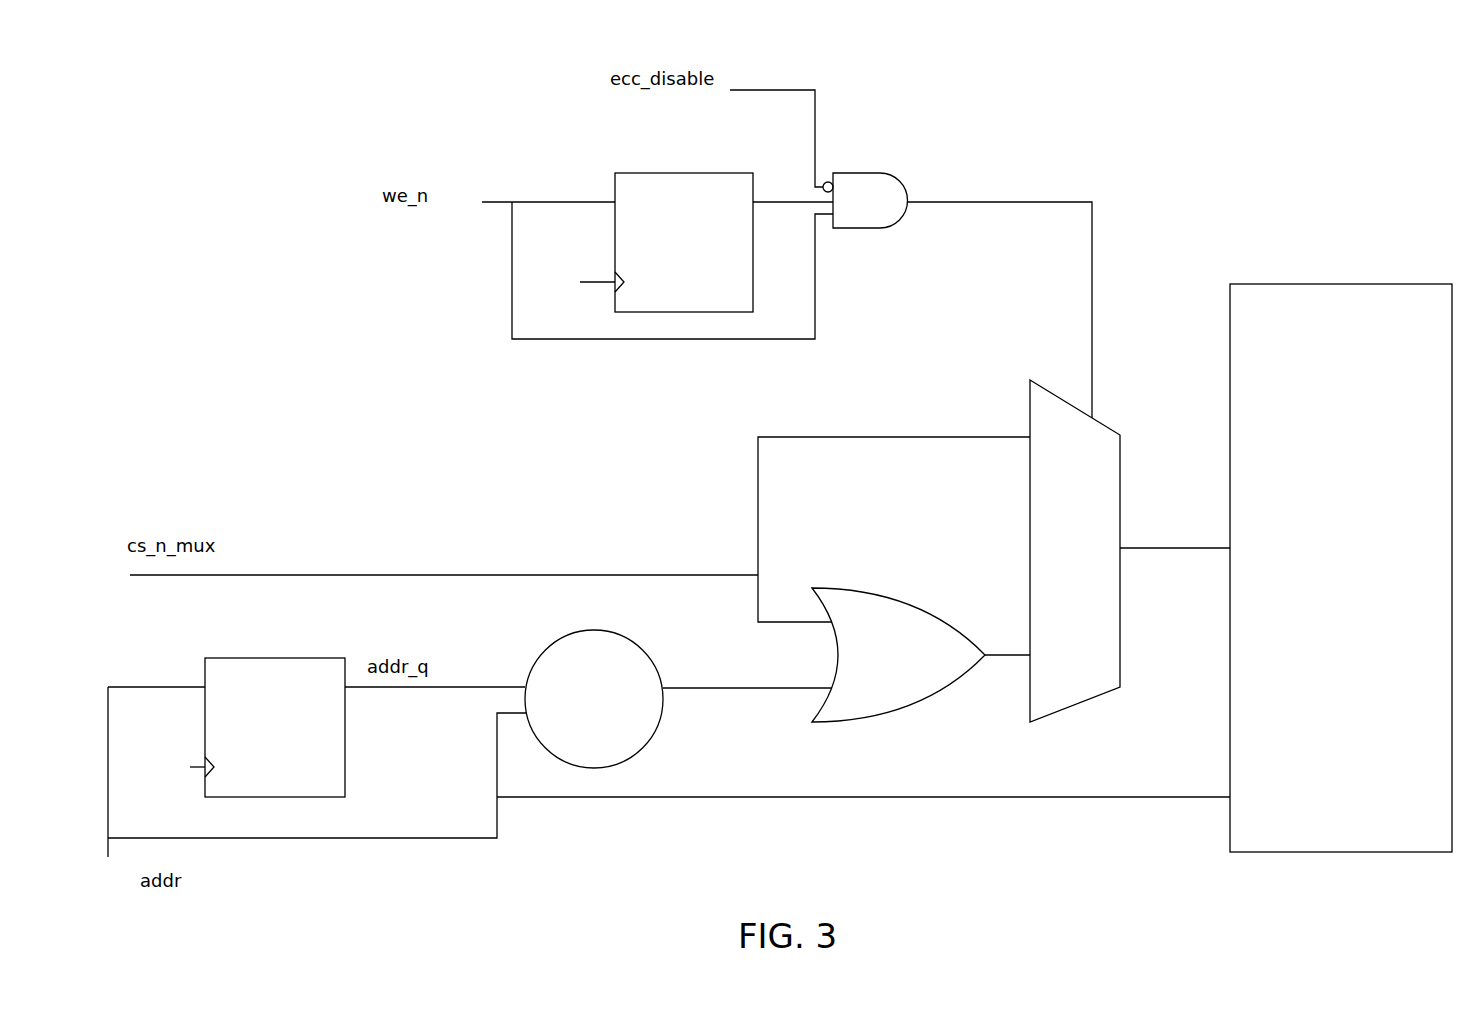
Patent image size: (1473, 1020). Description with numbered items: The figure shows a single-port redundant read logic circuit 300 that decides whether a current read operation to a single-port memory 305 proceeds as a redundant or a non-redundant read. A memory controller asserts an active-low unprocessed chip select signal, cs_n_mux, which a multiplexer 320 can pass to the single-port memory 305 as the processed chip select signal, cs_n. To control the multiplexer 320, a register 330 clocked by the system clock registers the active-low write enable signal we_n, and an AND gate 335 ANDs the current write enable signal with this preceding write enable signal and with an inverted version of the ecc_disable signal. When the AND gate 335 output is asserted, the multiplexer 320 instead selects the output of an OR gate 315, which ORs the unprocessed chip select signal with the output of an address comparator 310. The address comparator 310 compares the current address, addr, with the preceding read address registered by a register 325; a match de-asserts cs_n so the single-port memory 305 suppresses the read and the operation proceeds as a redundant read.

The single-port redundant read logic circuit 300 is at (343, 82).
The single-port memory 305 is at (1282, 284).
The address comparator 310 is at (663, 705).
The OR gate 315 is at (900, 713).
The multiplexer 320 is at (1120, 645).
The register 325 is at (345, 733).
The register 330 is at (650, 173).
The AND gate 335 is at (888, 173).